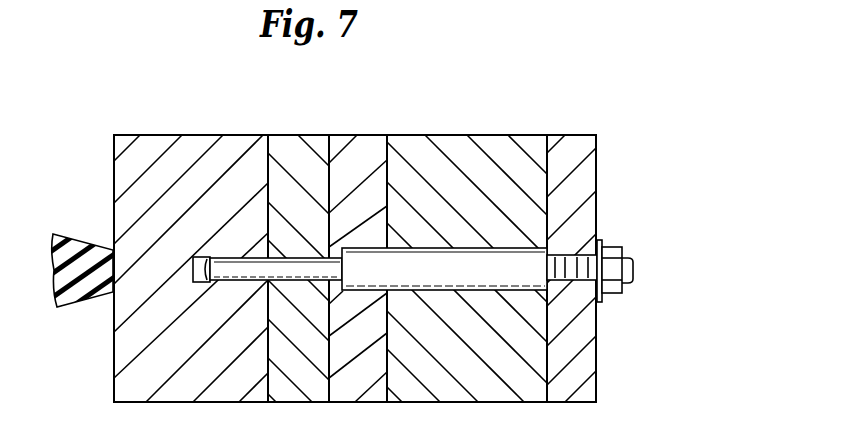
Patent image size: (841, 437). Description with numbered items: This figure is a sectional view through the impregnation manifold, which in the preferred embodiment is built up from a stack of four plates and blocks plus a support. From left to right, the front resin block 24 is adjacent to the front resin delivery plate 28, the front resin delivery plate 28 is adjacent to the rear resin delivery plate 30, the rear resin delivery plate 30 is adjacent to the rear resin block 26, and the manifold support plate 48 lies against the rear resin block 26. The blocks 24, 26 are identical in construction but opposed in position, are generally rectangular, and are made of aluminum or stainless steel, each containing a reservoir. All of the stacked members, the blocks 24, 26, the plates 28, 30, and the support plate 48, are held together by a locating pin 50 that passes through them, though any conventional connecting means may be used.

The first plate 24 is at (192, 152).
The second plate 28 is at (298, 143).
The third plate 30 is at (368, 142).
The fourth plate 26 is at (434, 145).
The clamping plate 48 is at (565, 137).
The bolt 50 is at (631, 254).